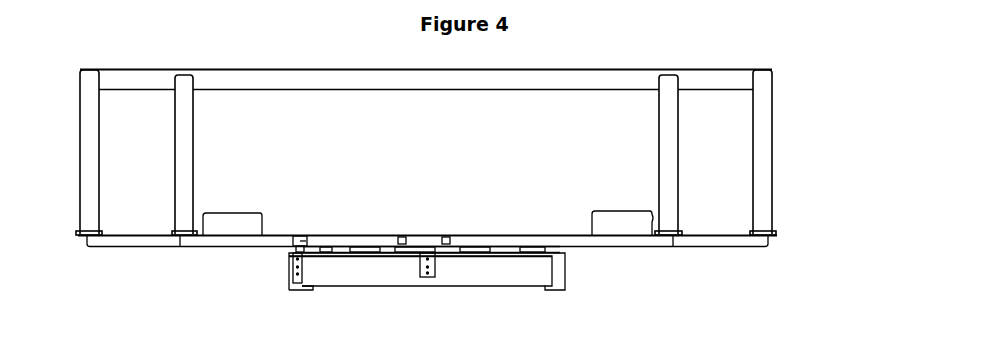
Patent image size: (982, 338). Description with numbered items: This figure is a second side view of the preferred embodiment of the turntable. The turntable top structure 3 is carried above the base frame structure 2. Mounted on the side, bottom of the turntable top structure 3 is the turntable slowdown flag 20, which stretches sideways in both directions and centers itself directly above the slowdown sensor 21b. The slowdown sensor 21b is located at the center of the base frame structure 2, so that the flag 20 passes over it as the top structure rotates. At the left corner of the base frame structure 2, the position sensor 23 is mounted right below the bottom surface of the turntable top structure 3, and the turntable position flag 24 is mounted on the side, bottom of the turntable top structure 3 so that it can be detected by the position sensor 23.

The base frame structure 2 is at (567, 273).
The turntable top structure 3 is at (718, 233).
The turntable slowdown flag 20 is at (422, 242).
The slowdown sensor 21b is at (440, 262).
The position sensor 23 is at (305, 260).
The turntable position flag 24 is at (307, 237).